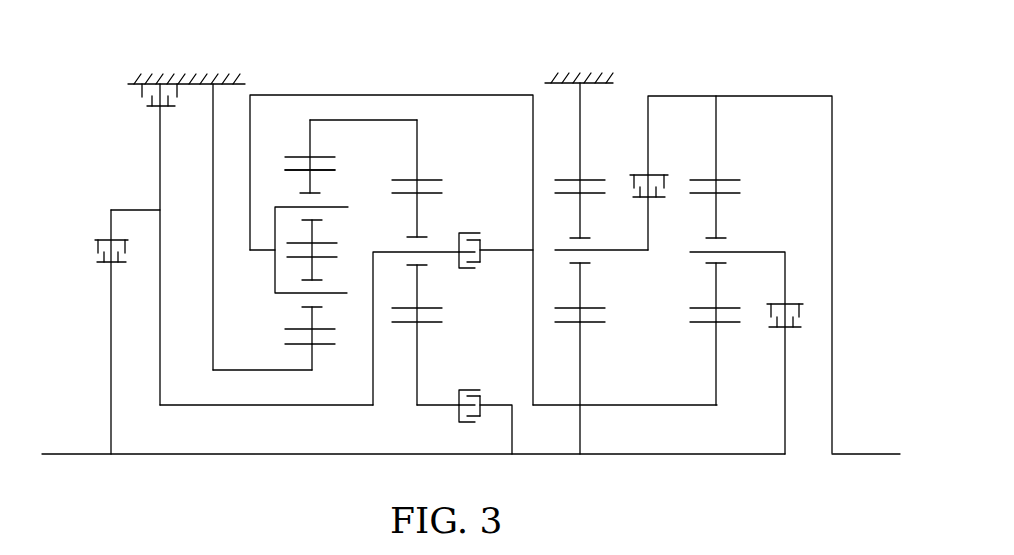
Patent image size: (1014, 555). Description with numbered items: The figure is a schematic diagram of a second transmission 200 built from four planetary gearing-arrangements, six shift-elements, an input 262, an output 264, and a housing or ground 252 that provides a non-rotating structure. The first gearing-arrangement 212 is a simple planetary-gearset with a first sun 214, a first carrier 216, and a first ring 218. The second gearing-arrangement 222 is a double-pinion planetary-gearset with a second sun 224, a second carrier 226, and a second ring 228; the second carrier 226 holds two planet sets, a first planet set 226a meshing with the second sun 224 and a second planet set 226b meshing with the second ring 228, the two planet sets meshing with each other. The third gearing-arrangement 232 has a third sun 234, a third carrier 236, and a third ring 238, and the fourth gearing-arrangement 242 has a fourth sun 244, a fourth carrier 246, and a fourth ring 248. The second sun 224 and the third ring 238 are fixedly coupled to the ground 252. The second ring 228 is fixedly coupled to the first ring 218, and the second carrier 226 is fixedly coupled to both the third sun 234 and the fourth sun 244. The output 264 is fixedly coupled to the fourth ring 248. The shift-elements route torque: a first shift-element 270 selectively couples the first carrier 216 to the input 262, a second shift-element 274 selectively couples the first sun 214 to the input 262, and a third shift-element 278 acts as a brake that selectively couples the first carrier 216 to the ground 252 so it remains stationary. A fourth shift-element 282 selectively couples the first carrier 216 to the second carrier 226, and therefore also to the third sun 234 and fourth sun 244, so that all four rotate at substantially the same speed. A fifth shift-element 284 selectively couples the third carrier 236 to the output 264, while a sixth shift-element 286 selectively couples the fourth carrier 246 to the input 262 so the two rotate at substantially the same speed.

The second transmission 200 is at (124, 40).
The first gearing-arrangement 212 is at (408, 448).
The first sun 214 is at (420, 333).
The first carrier 216 is at (390, 240).
The first ring 218 is at (420, 152).
The second gearing-arrangement 222 is at (266, 420).
The second sun 224 is at (313, 357).
The second carrier 226 is at (262, 262).
The first planet set 226a is at (312, 308).
The second planet set 226b is at (312, 188).
The second ring 228 is at (310, 150).
The third gearing-arrangement 232 is at (575, 448).
The third sun 234 is at (582, 387).
The third carrier 236 is at (608, 264).
The third ring 238 is at (582, 168).
The fourth gearing-arrangement 242 is at (708, 448).
The fourth sun 244 is at (718, 387).
The fourth carrier 246 is at (748, 238).
The fourth ring 248 is at (718, 168).
The ground 252 is at (200, 84).
The input 262 is at (82, 455).
The output 264 is at (852, 455).
The first shift-element 270 is at (104, 240).
The second shift-element 274 is at (482, 402).
The third shift-element 278 is at (145, 107).
The fourth shift-element 282 is at (482, 246).
The fifth shift-element 284 is at (656, 198).
The sixth shift-element 286 is at (788, 328).